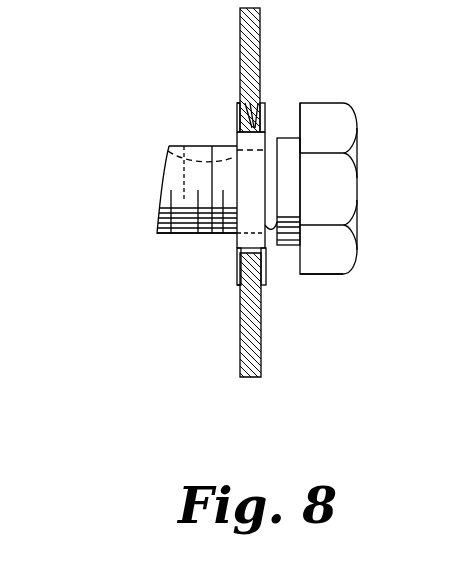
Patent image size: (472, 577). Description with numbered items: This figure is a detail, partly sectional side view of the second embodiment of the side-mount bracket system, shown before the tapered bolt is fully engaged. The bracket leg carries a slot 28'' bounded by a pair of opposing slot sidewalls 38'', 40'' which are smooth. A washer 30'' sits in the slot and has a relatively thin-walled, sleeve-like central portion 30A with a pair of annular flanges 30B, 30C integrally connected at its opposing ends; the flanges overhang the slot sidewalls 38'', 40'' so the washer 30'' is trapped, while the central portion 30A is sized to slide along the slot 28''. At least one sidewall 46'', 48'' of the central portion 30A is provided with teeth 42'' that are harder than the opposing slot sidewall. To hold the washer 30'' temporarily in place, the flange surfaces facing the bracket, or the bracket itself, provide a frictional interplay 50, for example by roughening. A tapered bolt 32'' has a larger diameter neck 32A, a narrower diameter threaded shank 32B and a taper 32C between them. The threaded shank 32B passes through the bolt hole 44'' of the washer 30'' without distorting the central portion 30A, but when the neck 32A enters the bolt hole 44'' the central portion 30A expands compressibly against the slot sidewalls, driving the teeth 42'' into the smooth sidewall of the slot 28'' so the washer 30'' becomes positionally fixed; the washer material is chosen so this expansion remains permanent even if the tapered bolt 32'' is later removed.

The slot 28'' is at (177, 224).
The washer 30'' is at (316, 149).
The central portion 30A is at (263, 276).
The annular flange 30B is at (235, 279).
The annular flange 30C is at (265, 278).
The tapered bolt 32'' is at (378, 188).
The neck 32A is at (302, 116).
The threaded shank 32B is at (170, 236).
The taper 32C is at (268, 248).
The slot sidewall 38'' is at (315, 291).
The slot sidewall 40'' is at (173, 117).
The teeth 42'' is at (286, 79).
The bolt hole 44'' is at (156, 144).
The sidewall of central portion 46'' is at (235, 329).
The sidewall of central portion 48'' is at (194, 74).
The frictional interplay 50 is at (231, 98).